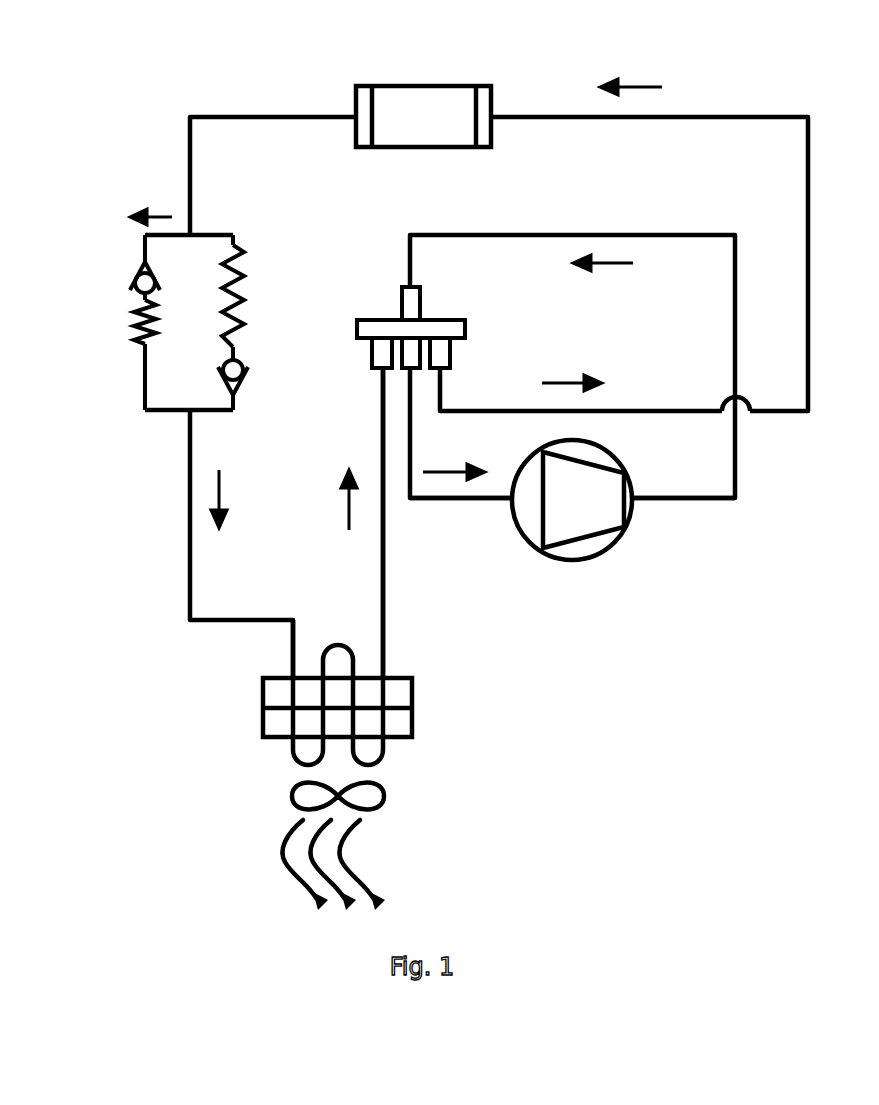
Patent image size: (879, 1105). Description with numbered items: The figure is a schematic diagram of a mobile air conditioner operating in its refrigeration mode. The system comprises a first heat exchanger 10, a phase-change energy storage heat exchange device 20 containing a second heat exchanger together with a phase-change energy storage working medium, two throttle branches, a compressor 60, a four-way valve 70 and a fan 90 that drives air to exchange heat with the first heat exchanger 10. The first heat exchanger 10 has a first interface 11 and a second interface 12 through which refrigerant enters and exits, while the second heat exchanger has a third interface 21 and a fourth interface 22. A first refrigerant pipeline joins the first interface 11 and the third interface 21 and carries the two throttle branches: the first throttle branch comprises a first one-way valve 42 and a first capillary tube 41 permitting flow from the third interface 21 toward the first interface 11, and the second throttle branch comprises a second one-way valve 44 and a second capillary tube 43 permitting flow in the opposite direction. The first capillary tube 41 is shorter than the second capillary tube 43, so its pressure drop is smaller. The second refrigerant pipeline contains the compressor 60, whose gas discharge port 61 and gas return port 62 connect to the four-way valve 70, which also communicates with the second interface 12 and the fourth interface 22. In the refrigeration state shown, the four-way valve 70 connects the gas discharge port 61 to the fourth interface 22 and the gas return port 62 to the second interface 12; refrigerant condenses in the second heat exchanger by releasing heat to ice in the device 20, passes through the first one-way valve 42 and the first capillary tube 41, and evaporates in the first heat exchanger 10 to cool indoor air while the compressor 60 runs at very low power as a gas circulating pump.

The first heat exchanger 10 is at (412, 707).
The first interface 11 is at (290, 672).
The second interface 12 is at (385, 673).
The phase-change energy storage heat exchange device 20 is at (387, 85).
The third interface 21 is at (360, 117).
The fourth interface 22 is at (492, 122).
The first capillary tube 41 is at (135, 323).
The first one-way valve 42 is at (130, 283).
The second capillary tube 43 is at (240, 285).
The second one-way valve 44 is at (240, 385).
The compressor 60 is at (605, 553).
The gas discharge port 61 is at (633, 503).
The gas return port 62 is at (515, 502).
The four-way valve 70 is at (448, 320).
The fan 90 is at (292, 793).